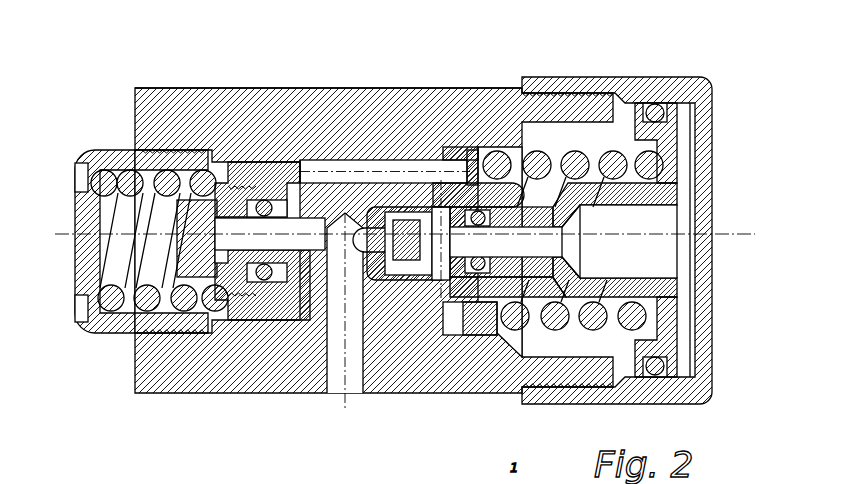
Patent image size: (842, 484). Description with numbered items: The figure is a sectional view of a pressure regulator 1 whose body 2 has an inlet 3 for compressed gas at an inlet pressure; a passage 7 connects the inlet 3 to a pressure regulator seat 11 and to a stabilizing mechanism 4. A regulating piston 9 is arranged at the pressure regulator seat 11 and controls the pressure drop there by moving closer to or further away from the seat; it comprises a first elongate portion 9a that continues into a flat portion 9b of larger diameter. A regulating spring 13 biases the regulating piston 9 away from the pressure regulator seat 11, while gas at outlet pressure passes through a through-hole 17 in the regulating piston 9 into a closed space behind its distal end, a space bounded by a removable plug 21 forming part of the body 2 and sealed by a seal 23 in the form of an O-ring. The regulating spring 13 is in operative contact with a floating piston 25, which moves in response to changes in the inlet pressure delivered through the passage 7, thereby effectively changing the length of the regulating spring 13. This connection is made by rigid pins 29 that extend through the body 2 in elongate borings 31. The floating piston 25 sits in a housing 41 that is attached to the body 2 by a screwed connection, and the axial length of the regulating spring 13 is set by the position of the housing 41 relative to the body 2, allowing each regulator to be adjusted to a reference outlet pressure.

The pressure regulator 1 is at (499, 50).
The body 2 is at (253, 88).
The inlet 3 is at (336, 392).
The stabilizing mechanism 4 is at (190, 87).
The passage 7 is at (383, 226).
The regulating piston 9 is at (633, 192).
The first elongate portion 9a is at (513, 278).
The flat portion 9b is at (670, 135).
The pressure regulator seat 11 is at (398, 218).
The regulating spring 13 is at (635, 318).
The through-hole 17 is at (543, 233).
The removable plug 21 is at (688, 405).
The seal 23 is at (655, 100).
The floating piston 25 is at (260, 328).
The rigid pins 29 is at (318, 160).
The elongate borings 31 is at (303, 160).
The housing 41 is at (103, 148).